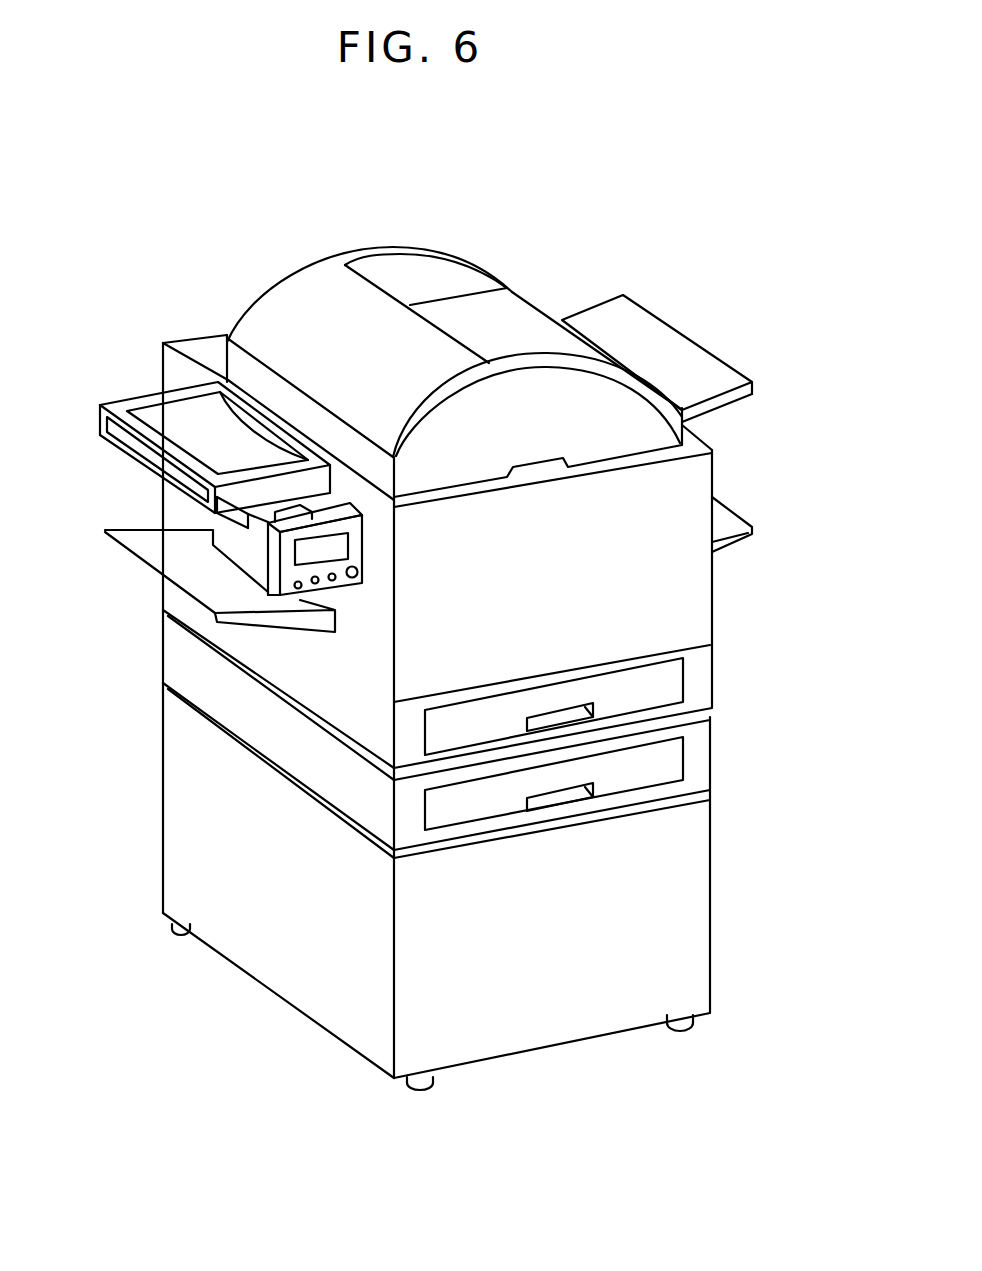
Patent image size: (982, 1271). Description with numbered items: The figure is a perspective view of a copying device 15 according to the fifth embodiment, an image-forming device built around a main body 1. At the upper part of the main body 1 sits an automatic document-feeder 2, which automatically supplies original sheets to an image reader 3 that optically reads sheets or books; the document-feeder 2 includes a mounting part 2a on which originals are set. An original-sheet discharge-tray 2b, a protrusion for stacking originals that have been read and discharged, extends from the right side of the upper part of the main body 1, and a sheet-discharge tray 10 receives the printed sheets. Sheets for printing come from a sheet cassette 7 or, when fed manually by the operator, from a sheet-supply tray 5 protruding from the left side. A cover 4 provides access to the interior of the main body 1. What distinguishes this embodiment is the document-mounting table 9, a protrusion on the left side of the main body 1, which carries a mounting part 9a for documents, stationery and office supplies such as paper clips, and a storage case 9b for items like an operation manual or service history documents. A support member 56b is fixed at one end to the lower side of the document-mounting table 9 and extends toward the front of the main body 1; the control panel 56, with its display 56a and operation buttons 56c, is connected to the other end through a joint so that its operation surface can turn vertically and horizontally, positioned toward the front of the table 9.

The copying device 15 is at (407, 228).
The main body 1 is at (200, 330).
The automatic document-feeder 2 is at (340, 291).
The mounting part 2a is at (522, 320).
The original-sheet discharge-tray 2b is at (648, 325).
The image reader 3 is at (700, 473).
The cover 4 is at (700, 583).
The sheet-supply tray 5 is at (150, 552).
The sheet cassette 7 is at (672, 678).
The document-mounting table 9 is at (117, 408).
The mounting part 9a is at (158, 413).
The storage case 9b is at (143, 452).
The sheet-discharge tray 10 is at (722, 512).
The control panel 56 is at (265, 588).
The display 56a is at (340, 540).
The support member 56b is at (258, 525).
The operation buttons 56c is at (336, 585).